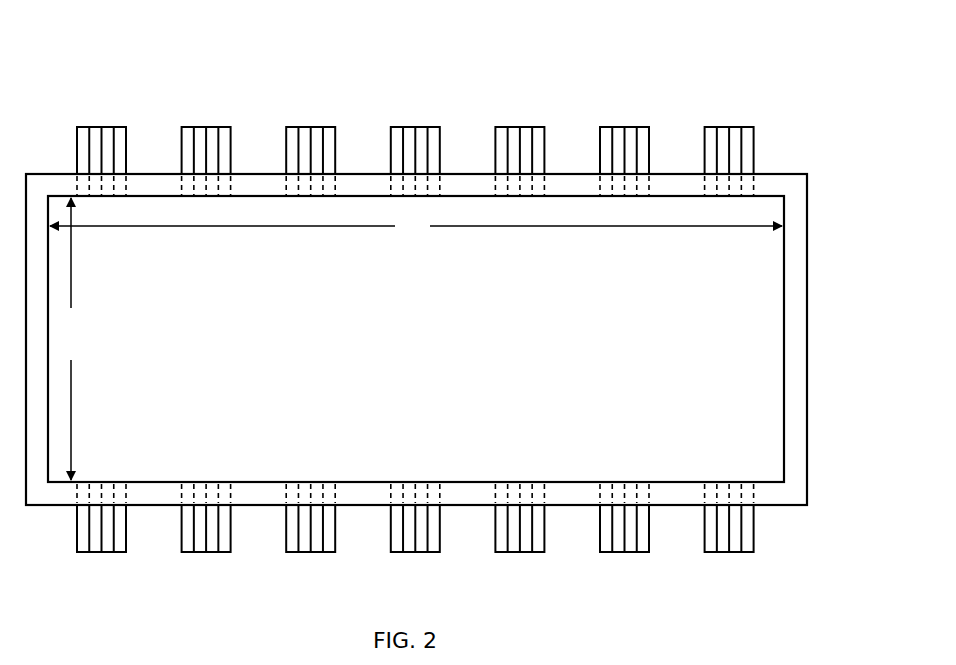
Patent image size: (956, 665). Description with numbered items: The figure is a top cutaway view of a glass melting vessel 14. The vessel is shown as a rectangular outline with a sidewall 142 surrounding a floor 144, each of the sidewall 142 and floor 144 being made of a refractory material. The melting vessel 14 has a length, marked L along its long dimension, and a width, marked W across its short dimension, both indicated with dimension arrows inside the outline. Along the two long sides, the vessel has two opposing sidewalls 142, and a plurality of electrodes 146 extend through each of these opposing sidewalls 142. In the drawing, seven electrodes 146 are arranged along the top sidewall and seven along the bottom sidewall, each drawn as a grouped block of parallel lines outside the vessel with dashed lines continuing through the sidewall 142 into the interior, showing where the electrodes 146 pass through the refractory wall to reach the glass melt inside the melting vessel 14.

The glass melting vessel 14 is at (411, 74).
The sidewall 142 is at (807, 366).
The floor 144 is at (755, 305).
The electrodes 146 is at (102, 127).